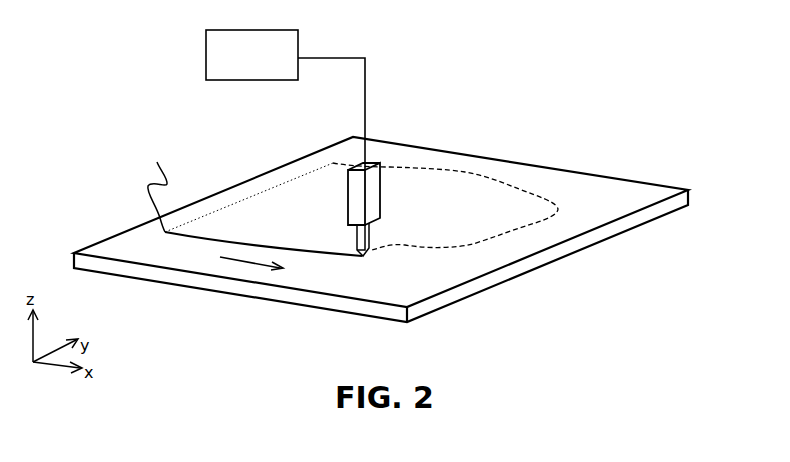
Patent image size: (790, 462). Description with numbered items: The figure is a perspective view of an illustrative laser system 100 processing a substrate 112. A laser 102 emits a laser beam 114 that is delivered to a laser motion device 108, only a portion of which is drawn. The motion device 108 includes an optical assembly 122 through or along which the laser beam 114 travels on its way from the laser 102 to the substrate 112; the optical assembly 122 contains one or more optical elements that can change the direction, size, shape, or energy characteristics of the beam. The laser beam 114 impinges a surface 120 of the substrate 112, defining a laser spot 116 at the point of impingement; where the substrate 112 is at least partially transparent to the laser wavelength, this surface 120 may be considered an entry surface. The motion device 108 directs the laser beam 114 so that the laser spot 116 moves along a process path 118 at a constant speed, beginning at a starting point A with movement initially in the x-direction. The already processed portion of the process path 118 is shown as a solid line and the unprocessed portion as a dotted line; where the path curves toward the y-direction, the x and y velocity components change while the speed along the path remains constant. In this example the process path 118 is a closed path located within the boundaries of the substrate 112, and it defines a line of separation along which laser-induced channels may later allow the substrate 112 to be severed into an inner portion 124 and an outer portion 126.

The laser system 100 is at (396, 54).
The laser 102 is at (217, 82).
The laser motion device 108 is at (380, 162).
The substrate 112 is at (550, 262).
The laser beam 114 is at (356, 238).
The laser spot 116 is at (366, 257).
The process path 118 is at (463, 173).
The surface 120 is at (605, 195).
The optical assembly 122 is at (355, 183).
The inner portion 124 is at (505, 193).
The outer portion 126 is at (545, 175).